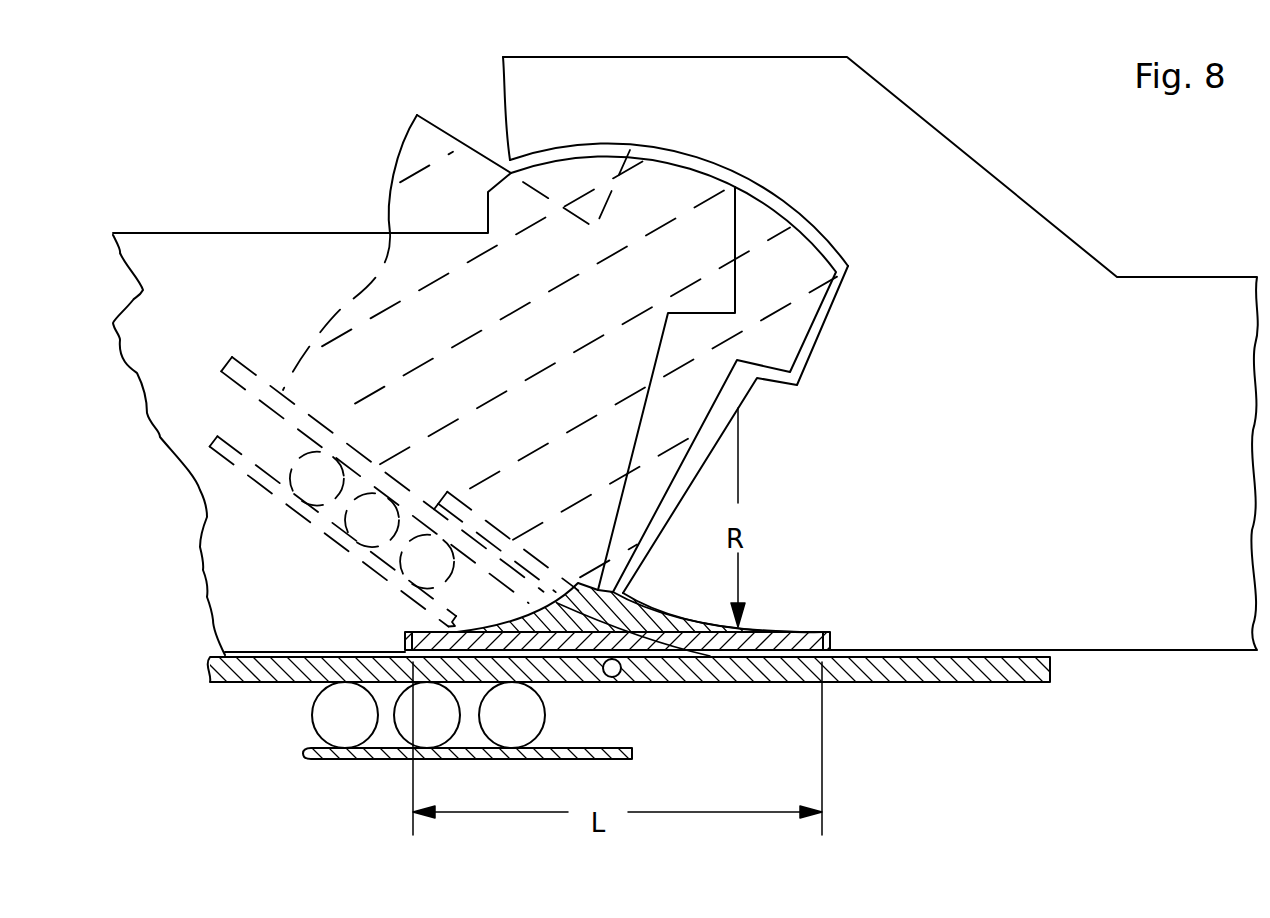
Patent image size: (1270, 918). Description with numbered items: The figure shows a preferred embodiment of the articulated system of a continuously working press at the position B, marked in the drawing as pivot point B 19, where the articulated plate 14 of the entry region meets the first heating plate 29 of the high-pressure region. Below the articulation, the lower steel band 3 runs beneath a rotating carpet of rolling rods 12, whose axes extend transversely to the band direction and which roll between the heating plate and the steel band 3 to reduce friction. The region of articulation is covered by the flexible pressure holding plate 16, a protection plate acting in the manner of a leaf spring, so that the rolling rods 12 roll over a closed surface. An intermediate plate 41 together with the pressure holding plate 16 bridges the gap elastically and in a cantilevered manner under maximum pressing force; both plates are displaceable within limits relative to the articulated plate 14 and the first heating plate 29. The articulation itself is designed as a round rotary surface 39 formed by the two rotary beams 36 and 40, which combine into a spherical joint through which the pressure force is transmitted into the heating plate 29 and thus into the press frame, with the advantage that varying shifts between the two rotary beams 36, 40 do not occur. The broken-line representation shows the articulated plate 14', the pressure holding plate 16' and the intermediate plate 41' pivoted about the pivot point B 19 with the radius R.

The steel band 3 is at (352, 553).
The rolling rods 12 is at (300, 482).
The articulated plate 14 is at (302, 414).
The articulated plate in pivoted position 14' is at (456, 252).
The pressure holding plate 16 is at (631, 697).
The pressure holding plate in pivoted position 16' is at (352, 480).
The pivot point B 19 is at (614, 677).
The first heating plate 29 is at (1014, 441).
The rotary beam 36 is at (679, 190).
The round rotary surface 39 is at (783, 206).
The rotary beam 40 is at (720, 185).
The intermediate plate 41 is at (647, 618).
The intermediate plate in pivoted position 41' is at (500, 520).